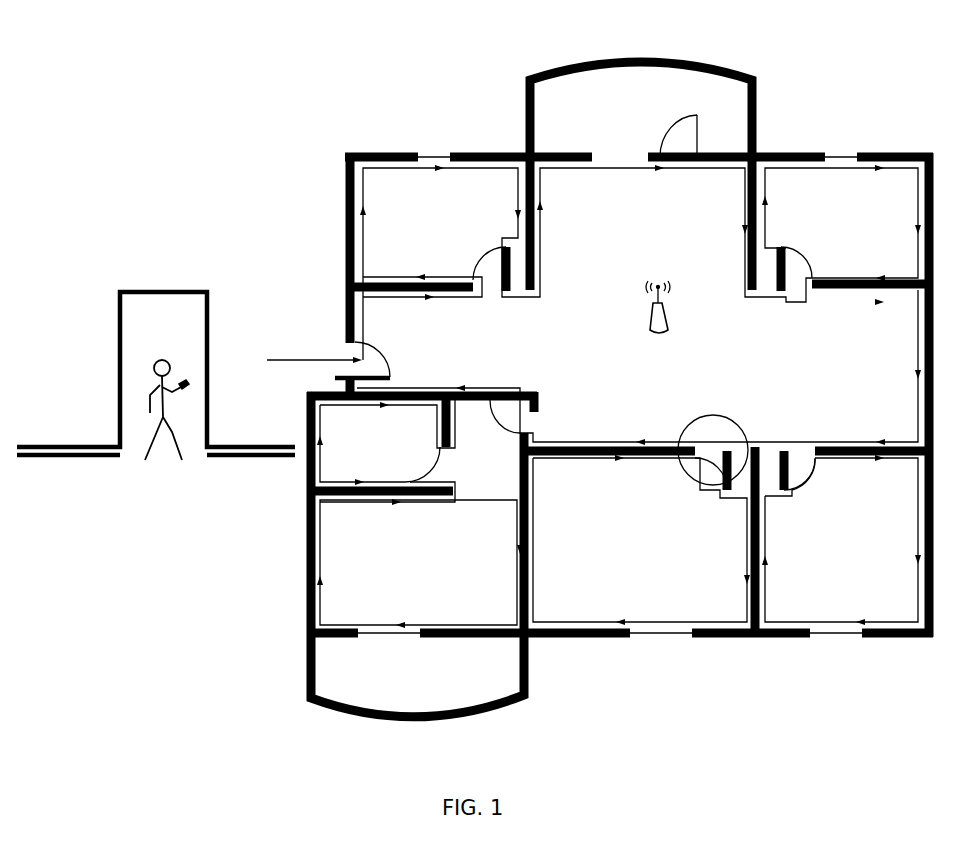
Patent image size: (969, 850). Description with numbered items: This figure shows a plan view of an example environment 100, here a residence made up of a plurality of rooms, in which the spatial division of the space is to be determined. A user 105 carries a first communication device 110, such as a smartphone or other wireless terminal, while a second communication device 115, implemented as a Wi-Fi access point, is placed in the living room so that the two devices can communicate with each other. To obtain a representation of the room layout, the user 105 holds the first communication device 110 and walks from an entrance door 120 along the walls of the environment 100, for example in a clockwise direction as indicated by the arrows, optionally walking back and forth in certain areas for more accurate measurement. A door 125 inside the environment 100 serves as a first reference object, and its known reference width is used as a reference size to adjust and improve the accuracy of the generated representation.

The environment 100 is at (416, 36).
The user 105 is at (152, 388).
The first communication device 110 is at (186, 382).
The second communication device 115 is at (665, 312).
The entrance door 120 is at (177, 291).
The door 125 is at (700, 422).